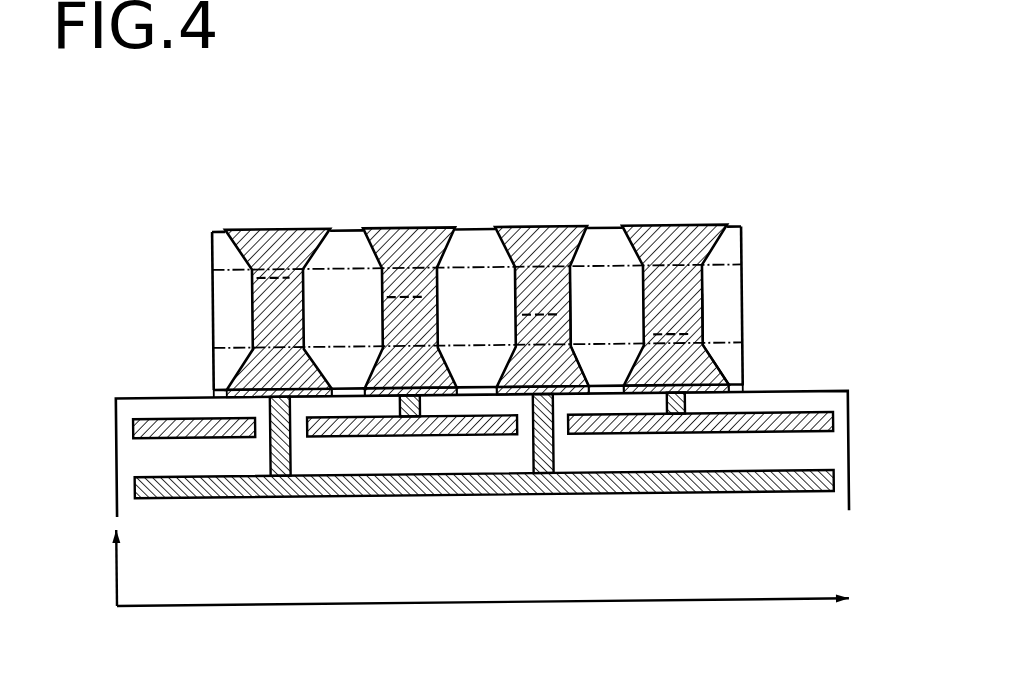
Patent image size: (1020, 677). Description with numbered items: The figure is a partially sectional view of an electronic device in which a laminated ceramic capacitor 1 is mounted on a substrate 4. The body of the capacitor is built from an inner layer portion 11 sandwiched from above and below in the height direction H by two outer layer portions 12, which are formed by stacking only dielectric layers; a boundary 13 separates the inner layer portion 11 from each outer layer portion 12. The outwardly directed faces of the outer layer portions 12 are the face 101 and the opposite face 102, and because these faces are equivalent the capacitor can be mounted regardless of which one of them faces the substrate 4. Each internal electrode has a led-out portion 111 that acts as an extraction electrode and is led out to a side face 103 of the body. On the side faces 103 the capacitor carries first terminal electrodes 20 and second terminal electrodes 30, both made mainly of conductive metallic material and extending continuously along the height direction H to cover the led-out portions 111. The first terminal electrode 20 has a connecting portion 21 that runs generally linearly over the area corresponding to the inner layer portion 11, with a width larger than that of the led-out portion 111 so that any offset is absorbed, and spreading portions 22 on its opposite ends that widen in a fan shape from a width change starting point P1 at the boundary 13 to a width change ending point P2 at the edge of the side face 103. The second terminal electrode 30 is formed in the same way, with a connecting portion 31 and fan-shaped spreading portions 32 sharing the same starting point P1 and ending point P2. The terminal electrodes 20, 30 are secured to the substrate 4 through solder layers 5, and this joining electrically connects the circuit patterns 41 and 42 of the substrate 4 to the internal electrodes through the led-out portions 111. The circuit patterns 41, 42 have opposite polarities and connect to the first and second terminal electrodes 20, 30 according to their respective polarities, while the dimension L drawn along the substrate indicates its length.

The laminated ceramic capacitor 1 is at (752, 225).
The substrate 4 is at (847, 400).
The solder layer 5 is at (744, 396).
The inner layer portion 11 is at (216, 297).
The outer layer portion 12 is at (216, 234).
The boundary 13 is at (216, 271).
The first terminal electrode 20 is at (376, 229).
The connecting portion 21 is at (574, 327).
The spreading portion 22 is at (579, 363).
The second terminal electrode 30 is at (251, 229).
The connecting portion 31 is at (705, 308).
The spreading portion 32 is at (715, 366).
The circuit pattern 41 is at (835, 421).
The circuit pattern 42 is at (835, 480).
The face 101 is at (216, 391).
The face 102 is at (226, 230).
The side face 103 is at (476, 244).
The led-out portion 111 is at (416, 295).
The width change starting point P1 is at (705, 350).
The width change ending point P2 is at (732, 388).
The height direction H is at (117, 568).
The length dimension L is at (490, 607).